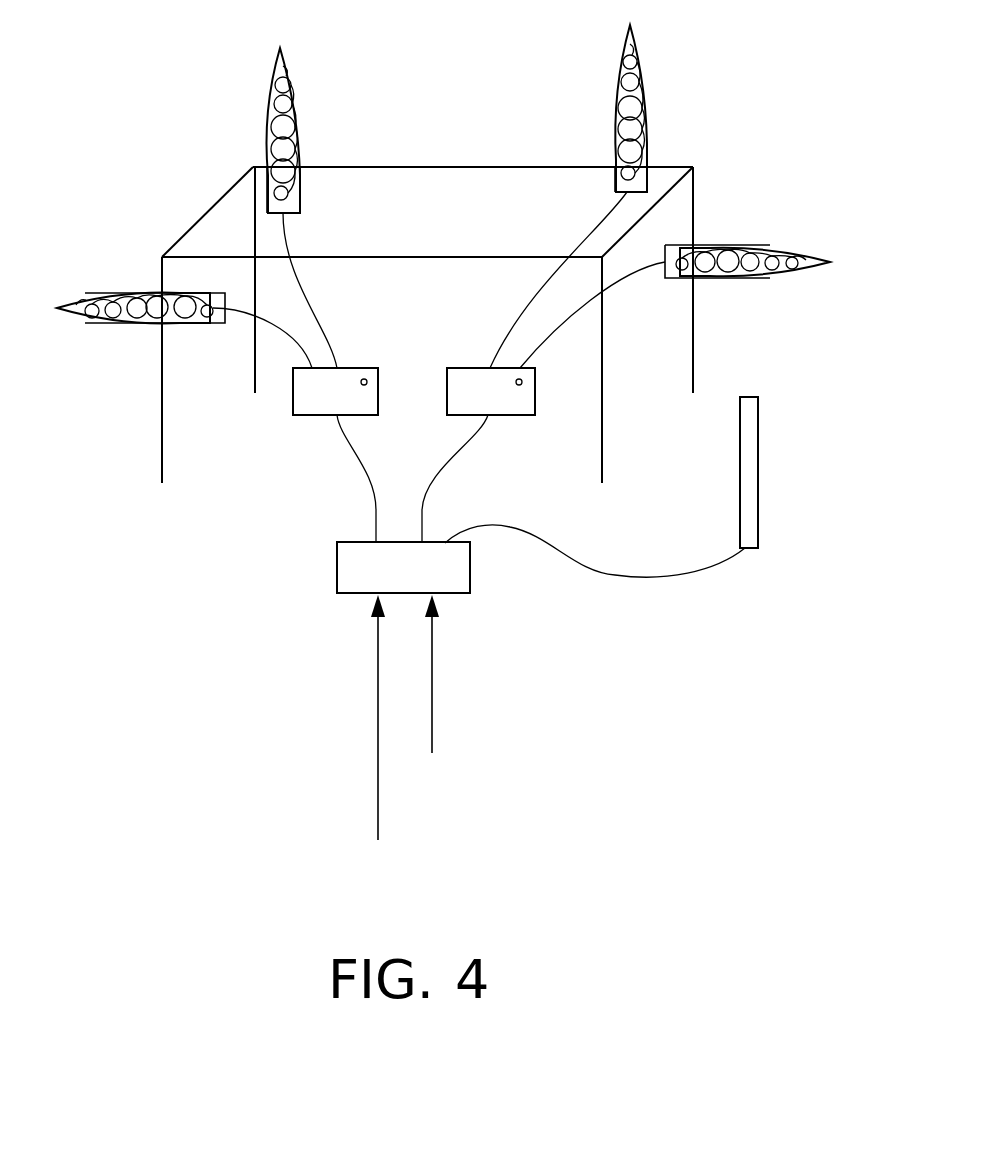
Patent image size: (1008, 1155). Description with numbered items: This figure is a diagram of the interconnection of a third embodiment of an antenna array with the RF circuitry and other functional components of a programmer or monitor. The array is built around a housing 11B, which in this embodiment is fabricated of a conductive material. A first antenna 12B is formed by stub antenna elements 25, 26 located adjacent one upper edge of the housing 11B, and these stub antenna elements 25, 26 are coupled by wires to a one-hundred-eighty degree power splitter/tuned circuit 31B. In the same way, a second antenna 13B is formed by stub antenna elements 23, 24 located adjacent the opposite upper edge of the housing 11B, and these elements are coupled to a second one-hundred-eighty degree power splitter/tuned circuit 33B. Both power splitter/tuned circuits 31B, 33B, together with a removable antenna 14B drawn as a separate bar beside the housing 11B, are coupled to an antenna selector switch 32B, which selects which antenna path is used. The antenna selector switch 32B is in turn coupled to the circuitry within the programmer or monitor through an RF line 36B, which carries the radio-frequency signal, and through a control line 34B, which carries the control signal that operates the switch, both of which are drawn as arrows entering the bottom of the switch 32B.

The housing 11B is at (187, 412).
The first antenna 12B is at (193, 183).
The second antenna 13B is at (731, 180).
The removable antenna 14B is at (758, 470).
The stub antenna element 23 is at (766, 278).
The stub antenna element 24 is at (615, 102).
The stub antenna element 25 is at (125, 290).
The stub antenna element 26 is at (300, 128).
The 180° power splitter/tuned circuit 31B is at (312, 415).
The antenna selector switch 32B is at (337, 565).
The 180° power splitter/tuned circuit 33B is at (518, 415).
The control input line 34B is at (377, 802).
The RF line 36B is at (432, 640).